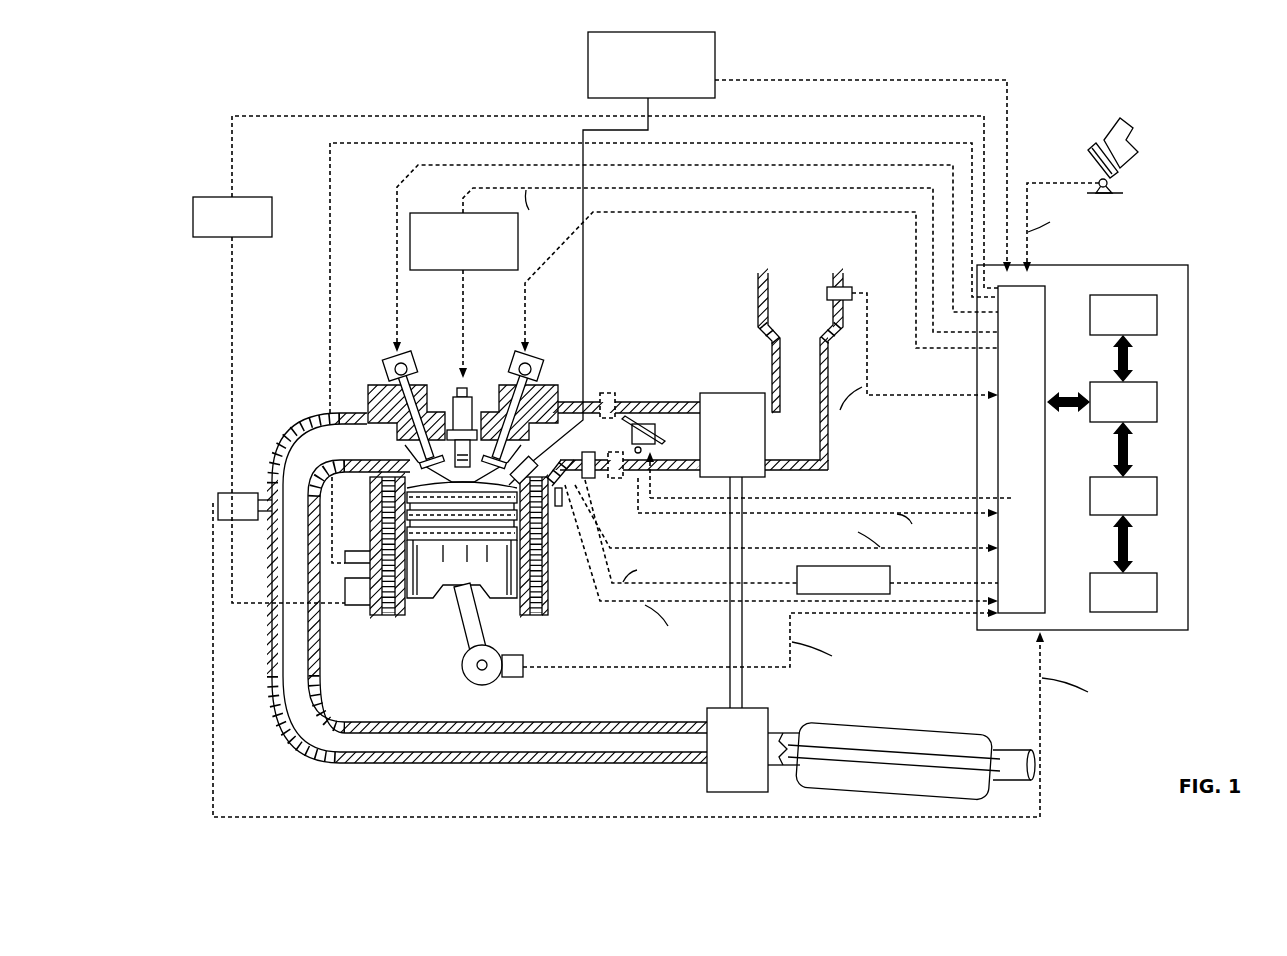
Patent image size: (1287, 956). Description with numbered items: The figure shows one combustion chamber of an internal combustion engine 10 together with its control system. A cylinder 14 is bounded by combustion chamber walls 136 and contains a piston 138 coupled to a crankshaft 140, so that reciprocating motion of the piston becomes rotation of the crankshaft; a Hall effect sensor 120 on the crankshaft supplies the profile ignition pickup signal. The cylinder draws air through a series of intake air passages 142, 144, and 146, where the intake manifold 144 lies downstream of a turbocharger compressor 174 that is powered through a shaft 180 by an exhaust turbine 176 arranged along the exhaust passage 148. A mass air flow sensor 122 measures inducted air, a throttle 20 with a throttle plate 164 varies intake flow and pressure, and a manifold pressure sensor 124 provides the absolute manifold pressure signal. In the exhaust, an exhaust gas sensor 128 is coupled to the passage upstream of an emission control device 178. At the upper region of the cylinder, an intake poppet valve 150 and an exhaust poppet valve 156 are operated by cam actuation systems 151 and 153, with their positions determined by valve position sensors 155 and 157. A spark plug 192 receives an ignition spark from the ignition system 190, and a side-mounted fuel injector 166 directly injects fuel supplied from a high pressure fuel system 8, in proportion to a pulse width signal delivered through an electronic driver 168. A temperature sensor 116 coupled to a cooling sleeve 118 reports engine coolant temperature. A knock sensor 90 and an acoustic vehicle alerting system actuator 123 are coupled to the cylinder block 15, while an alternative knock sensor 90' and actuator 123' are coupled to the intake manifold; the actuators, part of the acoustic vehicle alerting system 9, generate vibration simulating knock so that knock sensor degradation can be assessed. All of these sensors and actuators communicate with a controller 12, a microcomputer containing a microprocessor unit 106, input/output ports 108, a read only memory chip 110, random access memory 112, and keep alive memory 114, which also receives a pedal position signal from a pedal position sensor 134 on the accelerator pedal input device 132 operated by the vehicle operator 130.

The high pressure fuel system 8 is at (717, 50).
The acoustic vehicle alerting system (AVAS) 9 is at (240, 197).
The internal combustion engine 10 is at (208, 104).
The controller 12 is at (1190, 270).
The cylinder 14 is at (366, 505).
The cylinder block 15 is at (372, 608).
The throttle 20 is at (652, 430).
The knock sensor 90 is at (351, 575).
The knock sensor 90' is at (633, 366).
The microprocessor unit 106 is at (1160, 400).
The input/output ports 108 is at (1047, 296).
The read only memory chip 110 is at (1160, 312).
The random access memory 112 is at (1160, 495).
The keep alive memory 114 is at (1160, 590).
The temperature sensor 116 is at (548, 498).
The cooling sleeve 118 is at (558, 506).
The Hall effect sensor 120 is at (515, 680).
The mass air flow sensor 122 is at (842, 287).
The actuator 123 is at (347, 611).
The actuator 123' is at (798, 494).
The manifold pressure sensor 124 is at (583, 486).
The exhaust gas sensor 128 is at (220, 495).
The vehicle operator 130 is at (1140, 137).
The input device 132 is at (1090, 152).
The pedal position sensor 134 is at (1112, 182).
The combustion chamber walls 136 is at (403, 607).
The piston 138 is at (447, 570).
The crankshaft 140 is at (470, 683).
The intake air passage 142 is at (800, 371).
The intake manifold 144 is at (694, 449).
The intake air passage 146 is at (596, 430).
The exhaust passage 148 is at (489, 588).
The intake poppet valve 150 is at (476, 425).
The cam actuation system 151 is at (517, 360).
The cam actuation system 153 is at (410, 358).
The valve position sensor 155 is at (538, 353).
The exhaust poppet valve 156 is at (427, 452).
The valve position sensor 157 is at (392, 375).
The throttle plate 164 is at (623, 420).
The fuel injector 166 is at (520, 462).
The electronic driver 168 is at (892, 572).
The compressor 174 is at (716, 392).
The exhaust turbine 176 is at (705, 790).
The emission control device 178 is at (975, 722).
The shaft 180 is at (742, 680).
The ignition system 190 is at (426, 213).
The spark plug 192 is at (458, 418).